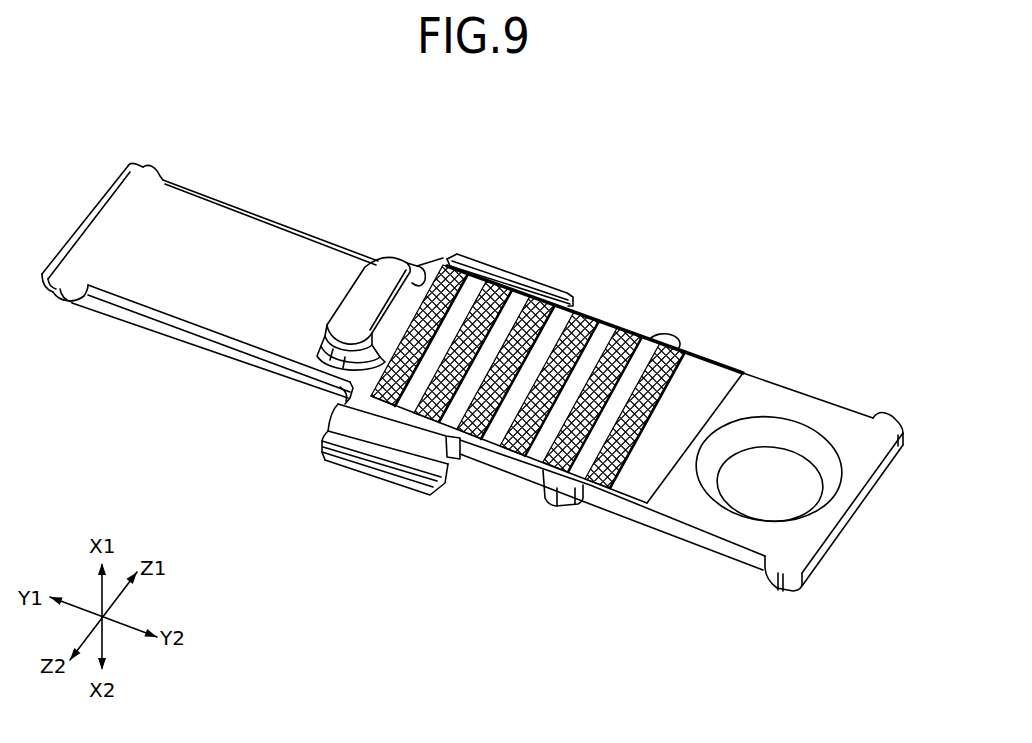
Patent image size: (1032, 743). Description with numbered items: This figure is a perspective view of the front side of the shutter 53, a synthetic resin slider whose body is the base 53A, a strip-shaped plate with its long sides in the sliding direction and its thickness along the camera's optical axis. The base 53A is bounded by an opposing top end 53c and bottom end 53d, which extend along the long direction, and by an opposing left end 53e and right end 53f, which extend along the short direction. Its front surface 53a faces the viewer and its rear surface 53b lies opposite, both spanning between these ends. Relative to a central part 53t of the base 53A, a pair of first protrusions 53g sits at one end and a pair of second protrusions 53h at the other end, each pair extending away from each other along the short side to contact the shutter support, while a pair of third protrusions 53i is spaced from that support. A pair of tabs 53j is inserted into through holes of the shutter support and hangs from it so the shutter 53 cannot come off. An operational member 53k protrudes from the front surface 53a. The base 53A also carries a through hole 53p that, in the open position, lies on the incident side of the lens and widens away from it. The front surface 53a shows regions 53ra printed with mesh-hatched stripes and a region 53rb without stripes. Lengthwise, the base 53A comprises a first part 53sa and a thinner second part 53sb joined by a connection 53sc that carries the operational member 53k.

The shutter 53 is at (238, 241).
The base 53A is at (479, 379).
The front surface 53a is at (595, 330).
The rear surface 53b is at (135, 325).
The top end 53c is at (753, 373).
The bottom end 53d is at (722, 546).
The left end 53e is at (80, 218).
The right end 53f is at (858, 504).
The first protrusions 53g is at (890, 421).
The second protrusions 53h is at (153, 168).
The third protrusions 53i is at (660, 347).
The tabs 53j is at (470, 261).
The operational member 53k is at (388, 271).
The through hole 53p is at (738, 489).
The regions on which stripes are printed 53ra is at (680, 350).
The region with no stripes printed 53rb is at (215, 312).
The first part 53sa is at (790, 386).
The second part 53sb is at (479, 379).
The connection 53sc is at (337, 388).
The central part 53t is at (503, 377).